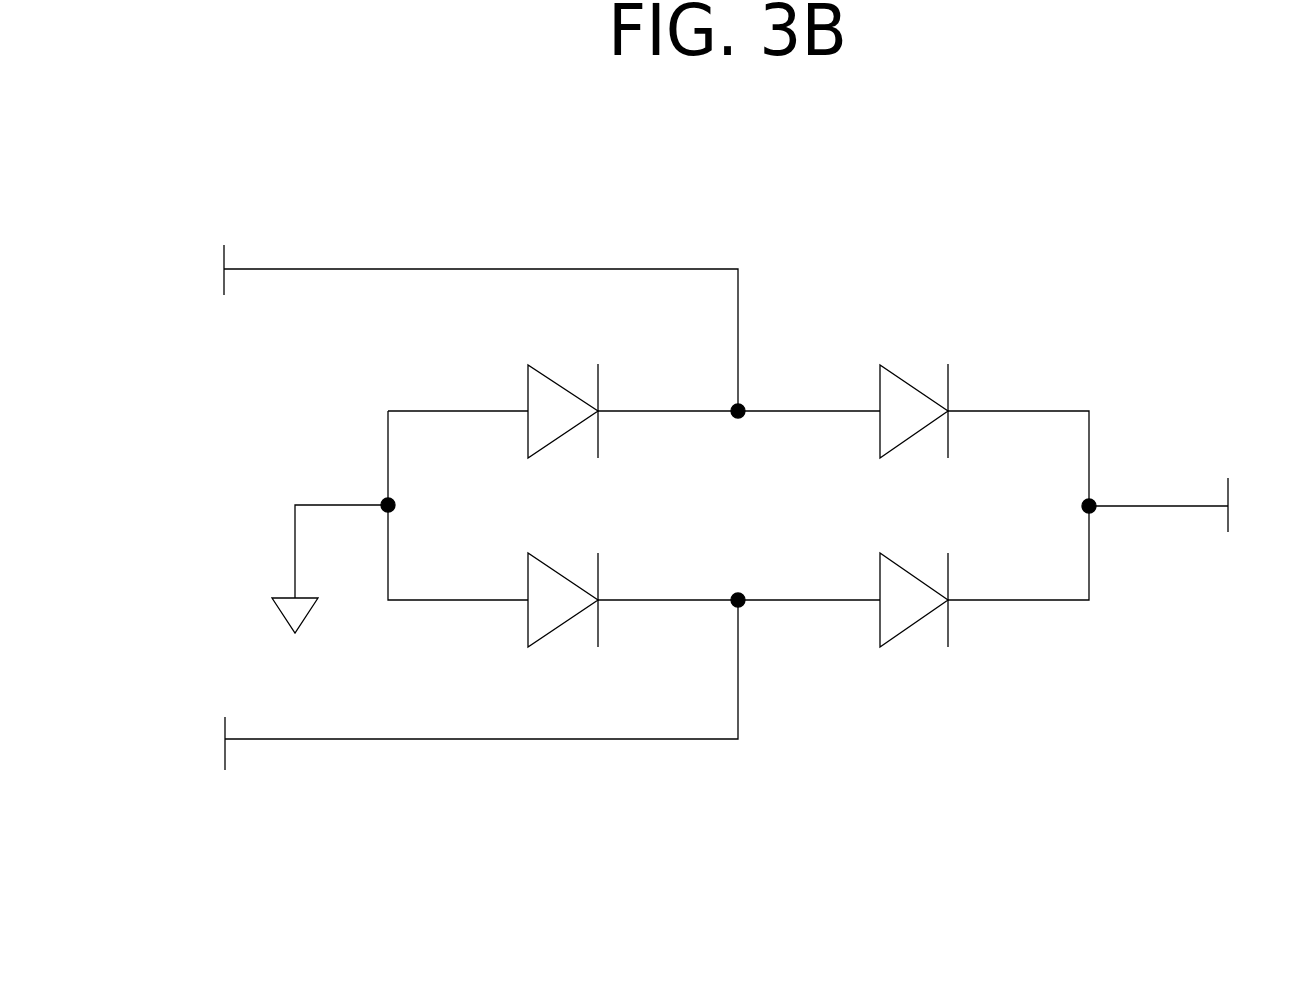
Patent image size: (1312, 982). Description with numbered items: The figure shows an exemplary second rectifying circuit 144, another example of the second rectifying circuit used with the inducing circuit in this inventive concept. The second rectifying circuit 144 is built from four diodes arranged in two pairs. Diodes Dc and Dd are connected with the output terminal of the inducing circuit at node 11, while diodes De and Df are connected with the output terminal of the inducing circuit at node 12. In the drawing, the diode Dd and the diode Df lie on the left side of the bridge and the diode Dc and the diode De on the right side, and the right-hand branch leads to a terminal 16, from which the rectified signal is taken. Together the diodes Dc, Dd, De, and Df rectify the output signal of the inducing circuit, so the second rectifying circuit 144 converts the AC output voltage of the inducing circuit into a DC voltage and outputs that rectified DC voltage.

The second rectifying circuit 144 is at (1228, 225).
The node 11 is at (224, 246).
The node 12 is at (225, 770).
The output terminal 16 is at (1228, 478).
The diode Dd is at (563, 435).
The diode Dc is at (914, 435).
The diode Df is at (563, 624).
The diode De is at (914, 624).